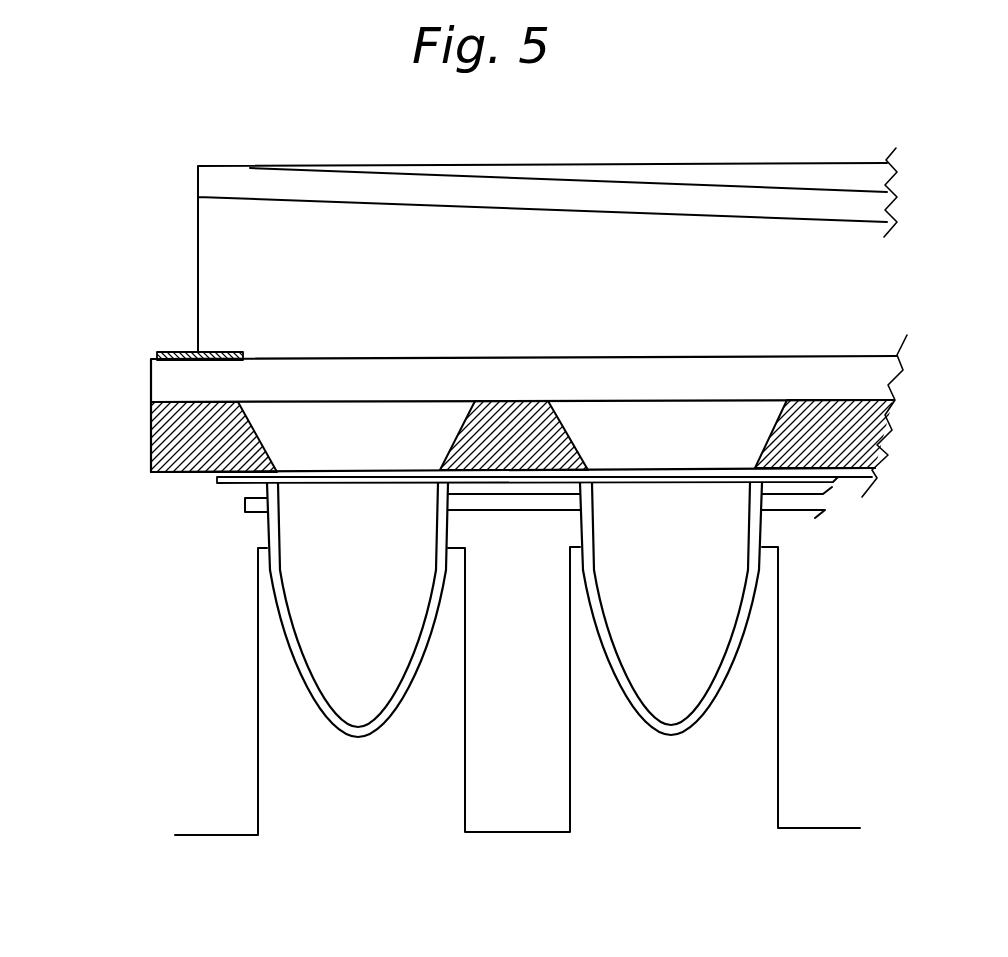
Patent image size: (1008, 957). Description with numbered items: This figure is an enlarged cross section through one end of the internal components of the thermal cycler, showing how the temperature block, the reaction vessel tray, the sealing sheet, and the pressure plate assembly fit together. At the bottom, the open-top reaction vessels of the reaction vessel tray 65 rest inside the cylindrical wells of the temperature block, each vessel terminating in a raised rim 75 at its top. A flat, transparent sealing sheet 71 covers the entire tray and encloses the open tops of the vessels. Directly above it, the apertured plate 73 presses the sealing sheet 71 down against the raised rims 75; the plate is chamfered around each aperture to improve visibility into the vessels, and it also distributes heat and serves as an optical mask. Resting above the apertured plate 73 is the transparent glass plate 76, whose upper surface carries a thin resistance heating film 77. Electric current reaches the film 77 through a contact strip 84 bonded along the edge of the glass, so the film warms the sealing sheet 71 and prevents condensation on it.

The resistance heating film 77 is at (268, 359).
The contact strip 84 is at (175, 352).
The glass plate 76 is at (168, 382).
The apertured plate 73 is at (165, 432).
The sealing sheet 71 is at (217, 478).
The raised rim 75 is at (240, 492).
The reaction vessel tray 65 is at (245, 513).